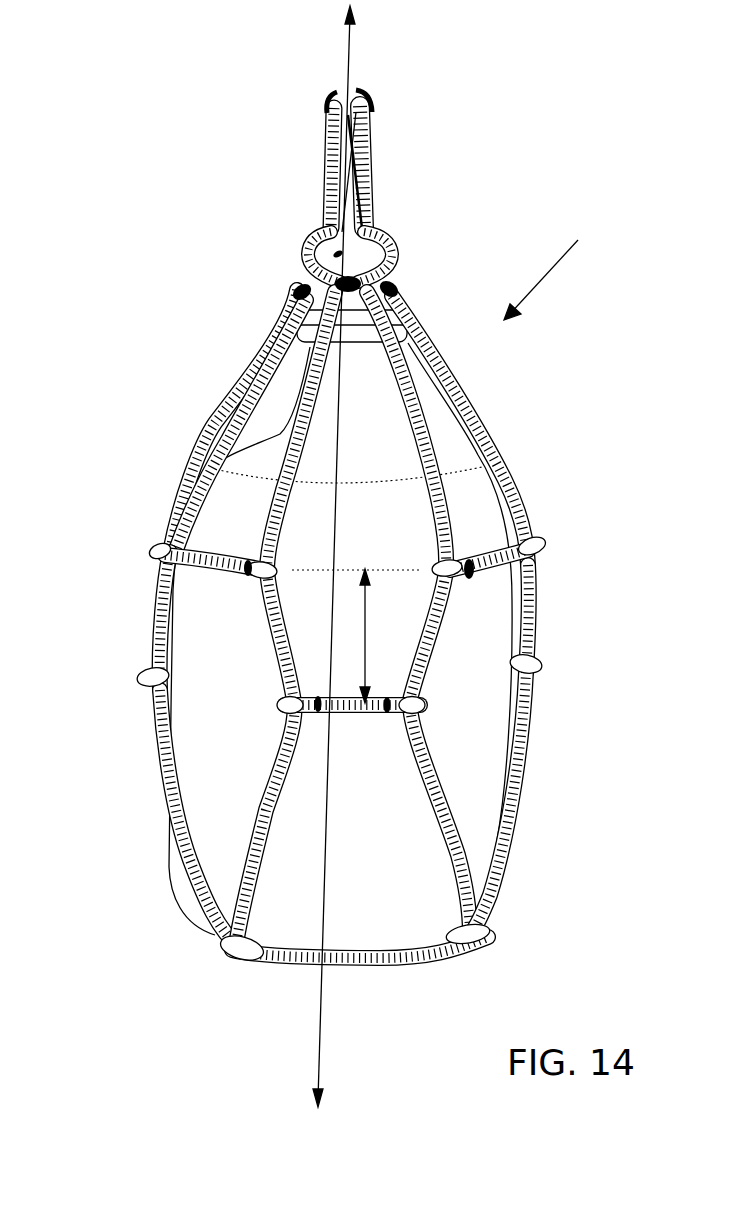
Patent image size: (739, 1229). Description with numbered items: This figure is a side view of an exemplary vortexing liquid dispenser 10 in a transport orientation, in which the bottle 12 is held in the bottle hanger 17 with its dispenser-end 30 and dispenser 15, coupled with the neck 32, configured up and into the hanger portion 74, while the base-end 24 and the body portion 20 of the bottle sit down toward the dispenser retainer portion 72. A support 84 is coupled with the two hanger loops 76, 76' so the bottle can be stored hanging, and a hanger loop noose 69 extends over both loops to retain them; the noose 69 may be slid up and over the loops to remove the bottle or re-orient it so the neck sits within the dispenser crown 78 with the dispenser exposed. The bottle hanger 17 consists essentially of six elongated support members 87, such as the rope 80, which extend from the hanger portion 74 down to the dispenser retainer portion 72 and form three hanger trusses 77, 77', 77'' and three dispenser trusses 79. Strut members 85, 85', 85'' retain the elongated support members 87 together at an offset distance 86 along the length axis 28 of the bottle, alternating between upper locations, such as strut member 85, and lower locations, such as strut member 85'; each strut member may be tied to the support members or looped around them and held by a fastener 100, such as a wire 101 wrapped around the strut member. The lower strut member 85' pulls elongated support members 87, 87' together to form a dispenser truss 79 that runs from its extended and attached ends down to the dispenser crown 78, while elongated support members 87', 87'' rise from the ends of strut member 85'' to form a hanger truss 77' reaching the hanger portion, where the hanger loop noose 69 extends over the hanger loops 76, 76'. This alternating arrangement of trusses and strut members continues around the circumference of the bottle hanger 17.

The vortexing liquid dispenser 10 is at (554, 262).
The bottle 12 is at (467, 657).
The dispenser 15 is at (390, 262).
The bottle hanger 17 is at (533, 720).
The body portion 20 is at (473, 843).
The base-end 24 is at (313, 940).
The length axis 28 is at (342, 62).
The dispenser-end 30 is at (448, 457).
The neck 32 is at (301, 283).
The hanger loop noose 69 is at (383, 250).
The dispenser retainer portion 72 is at (467, 955).
The hanger portion 74 is at (382, 186).
The hanger loop 76 is at (286, 168).
The hanger loop 76' is at (416, 167).
The hanger truss 77 is at (203, 425).
The hanger truss 77' is at (393, 431).
The hanger truss 77'' is at (233, 412).
The dispenser crown 78 is at (343, 957).
The dispenser truss 79 is at (267, 800).
The rope 80 is at (178, 492).
The support 84 is at (374, 97).
The strut member 85 is at (180, 533).
The strut member 85' is at (351, 757).
The strut member 85'' is at (540, 528).
The offset distance 86 is at (366, 618).
The elongated support member 87 is at (150, 819).
The elongated support member 87' is at (450, 752).
The elongated support member 87'' is at (549, 803).
The fastener 100 is at (471, 562).
The wire 101 is at (244, 558).